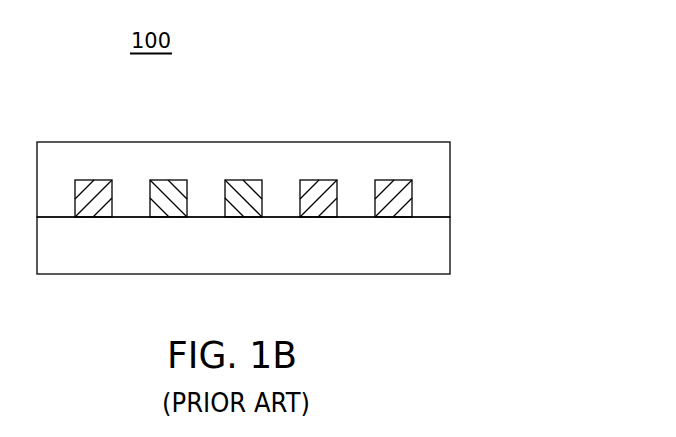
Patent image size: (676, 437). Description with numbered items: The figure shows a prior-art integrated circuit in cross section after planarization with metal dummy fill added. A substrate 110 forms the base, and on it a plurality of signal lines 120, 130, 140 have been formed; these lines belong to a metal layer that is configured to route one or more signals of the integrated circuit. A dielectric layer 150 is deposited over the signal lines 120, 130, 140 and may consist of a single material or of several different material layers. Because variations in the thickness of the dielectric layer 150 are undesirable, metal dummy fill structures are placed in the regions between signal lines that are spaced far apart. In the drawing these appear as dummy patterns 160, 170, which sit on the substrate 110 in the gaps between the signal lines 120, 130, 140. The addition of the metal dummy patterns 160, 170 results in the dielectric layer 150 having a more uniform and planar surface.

The substrate 110 is at (422, 245).
The signal line 120 is at (102, 180).
The signal line 130 is at (322, 180).
The signal line 140 is at (403, 180).
The dielectric layer 150 is at (427, 165).
The dummy pattern 160 is at (168, 180).
The dummy pattern 170 is at (245, 180).